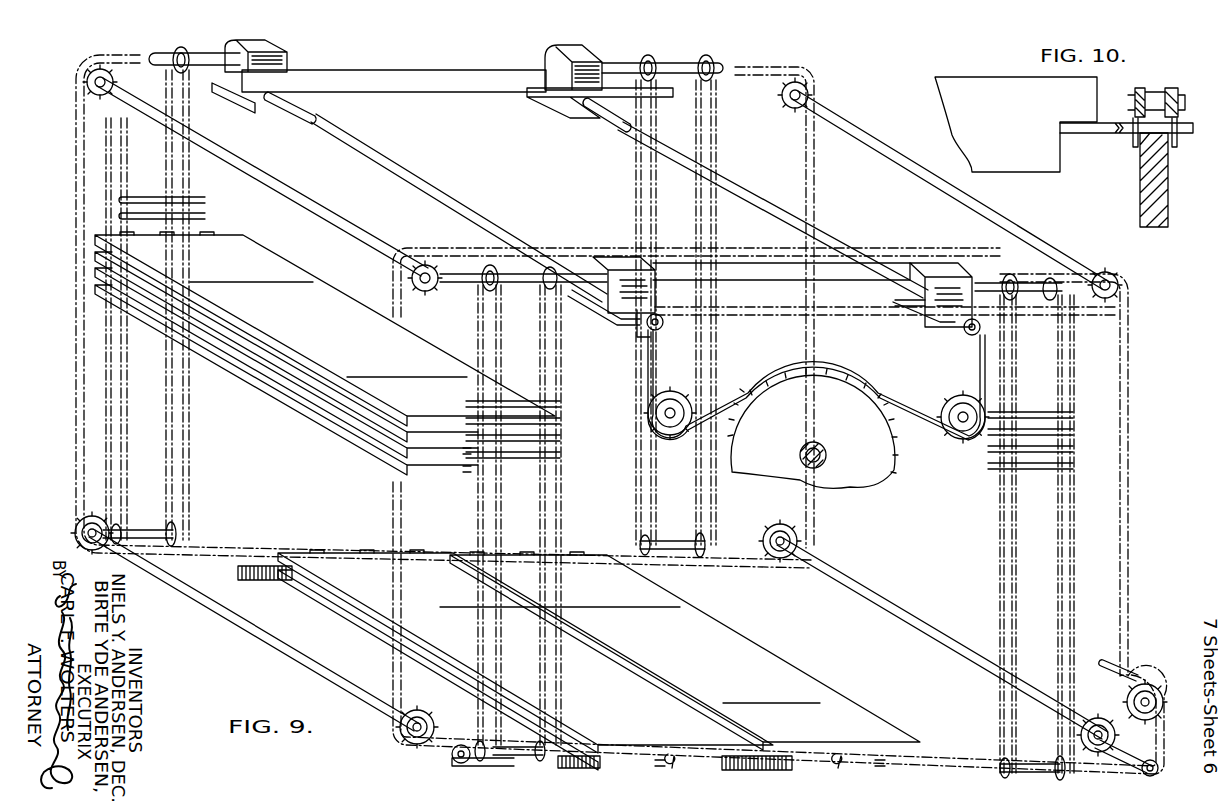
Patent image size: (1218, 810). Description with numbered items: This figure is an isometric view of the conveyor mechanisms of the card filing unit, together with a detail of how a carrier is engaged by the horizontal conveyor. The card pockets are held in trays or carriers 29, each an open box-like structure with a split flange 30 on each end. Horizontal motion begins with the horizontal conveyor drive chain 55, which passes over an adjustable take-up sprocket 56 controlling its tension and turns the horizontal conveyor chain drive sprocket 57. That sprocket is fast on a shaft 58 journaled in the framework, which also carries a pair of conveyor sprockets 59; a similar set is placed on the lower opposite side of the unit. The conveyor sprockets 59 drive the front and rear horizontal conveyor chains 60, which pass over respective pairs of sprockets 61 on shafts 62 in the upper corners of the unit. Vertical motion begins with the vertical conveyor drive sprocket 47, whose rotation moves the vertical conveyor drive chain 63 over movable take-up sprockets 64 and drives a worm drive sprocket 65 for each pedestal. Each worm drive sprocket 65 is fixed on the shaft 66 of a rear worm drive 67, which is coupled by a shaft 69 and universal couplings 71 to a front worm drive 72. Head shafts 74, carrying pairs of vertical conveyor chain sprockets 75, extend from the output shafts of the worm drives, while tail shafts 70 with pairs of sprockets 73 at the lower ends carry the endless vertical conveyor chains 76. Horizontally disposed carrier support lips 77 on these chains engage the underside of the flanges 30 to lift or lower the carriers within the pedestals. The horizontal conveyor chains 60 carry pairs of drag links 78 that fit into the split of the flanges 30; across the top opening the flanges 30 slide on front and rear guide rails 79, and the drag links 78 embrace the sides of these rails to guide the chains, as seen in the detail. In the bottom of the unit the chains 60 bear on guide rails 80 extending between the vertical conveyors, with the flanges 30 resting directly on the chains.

In FIG. 9, the tray carrier 29 is at (300, 392).
In FIG. 10, the tray carrier 29 is at (990, 88).
In FIG. 9, the split flange 30 is at (460, 472).
In FIG. 10, the split flange 30 is at (1112, 130).
In FIG. 9, the vertical conveyor drive sprocket 47 is at (890, 462).
In FIG. 9, the horizontal conveyor drive chain 55 is at (508, 768).
In FIG. 9, the take-up sprocket 56 is at (1152, 690).
In FIG. 9, the horizontal conveyor chain drive sprocket 57 is at (458, 764).
In FIG. 9, the shaft 58 is at (830, 578).
In FIG. 9, the conveyor sprocket 59 is at (76, 532).
In FIG. 9, the horizontal conveyor chain 60 is at (750, 70).
In FIG. 10, the horizontal conveyor chain 60 is at (1170, 88).
In FIG. 9, the sprocket 61 is at (90, 88).
In FIG. 9, the shaft 62 is at (302, 196).
In FIG. 9, the vertical conveyor drive chain 63 is at (888, 398).
In FIG. 9, the take-up sprocket 64 is at (667, 388).
In FIG. 9, the vertical conveyor worm drive sprocket 65 is at (660, 325).
In FIG. 9, the shaft 66 is at (640, 324).
In FIG. 9, the rear worm drive 67 is at (612, 312).
In FIG. 9, the shaft 69 is at (420, 176).
In FIG. 9, the tail shaft 70 is at (138, 526).
In FIG. 9, the universal coupling 71 is at (310, 104).
In FIG. 9, the front worm drive 72 is at (272, 50).
In FIG. 9, the sprocket 73 is at (178, 538).
In FIG. 9, the head shaft 74 is at (682, 78).
In FIG. 9, the vertical conveyor chain sprocket 75 is at (178, 48).
In FIG. 9, the vertical conveyor chain 76 is at (126, 168).
In FIG. 9, the carrier support lip 77 is at (207, 216).
In FIG. 9, the drag link 78 is at (672, 768).
In FIG. 10, the drag link 78 is at (1136, 148).
In FIG. 9, the guide rail 79 is at (460, 92).
In FIG. 10, the guide rail 79 is at (1166, 195).
In FIG. 9, the guide rail 80 is at (276, 580).